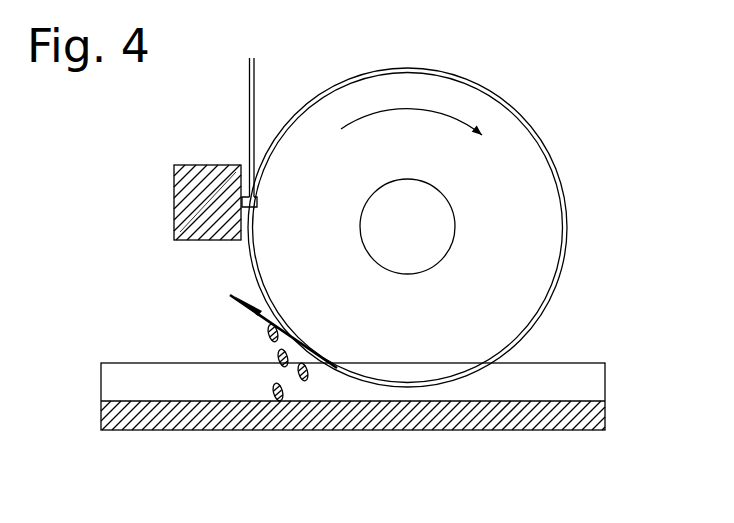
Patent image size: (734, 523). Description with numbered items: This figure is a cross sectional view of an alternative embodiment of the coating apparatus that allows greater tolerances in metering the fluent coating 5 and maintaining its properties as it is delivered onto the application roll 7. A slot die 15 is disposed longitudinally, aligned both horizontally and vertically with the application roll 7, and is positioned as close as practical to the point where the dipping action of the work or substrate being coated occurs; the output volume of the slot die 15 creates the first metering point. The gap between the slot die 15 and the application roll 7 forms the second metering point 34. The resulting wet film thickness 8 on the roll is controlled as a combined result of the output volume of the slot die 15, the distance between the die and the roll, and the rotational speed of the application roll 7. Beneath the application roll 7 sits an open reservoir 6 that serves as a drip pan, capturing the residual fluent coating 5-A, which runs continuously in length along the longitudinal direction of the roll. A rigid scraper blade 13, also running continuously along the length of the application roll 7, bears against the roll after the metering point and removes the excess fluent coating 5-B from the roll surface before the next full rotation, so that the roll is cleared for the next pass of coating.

The fluent coating 5 is at (197, 222).
The residual fluent coating 5-A is at (230, 417).
The excess fluent coating 5-B is at (295, 378).
The open reservoir 6 is at (607, 390).
The application roll 7 is at (555, 285).
The resulting wet film thickness 8 is at (570, 228).
The rigid scraper blade 13 is at (248, 307).
The slot die 15 is at (172, 204).
The second metering point 34 is at (257, 108).